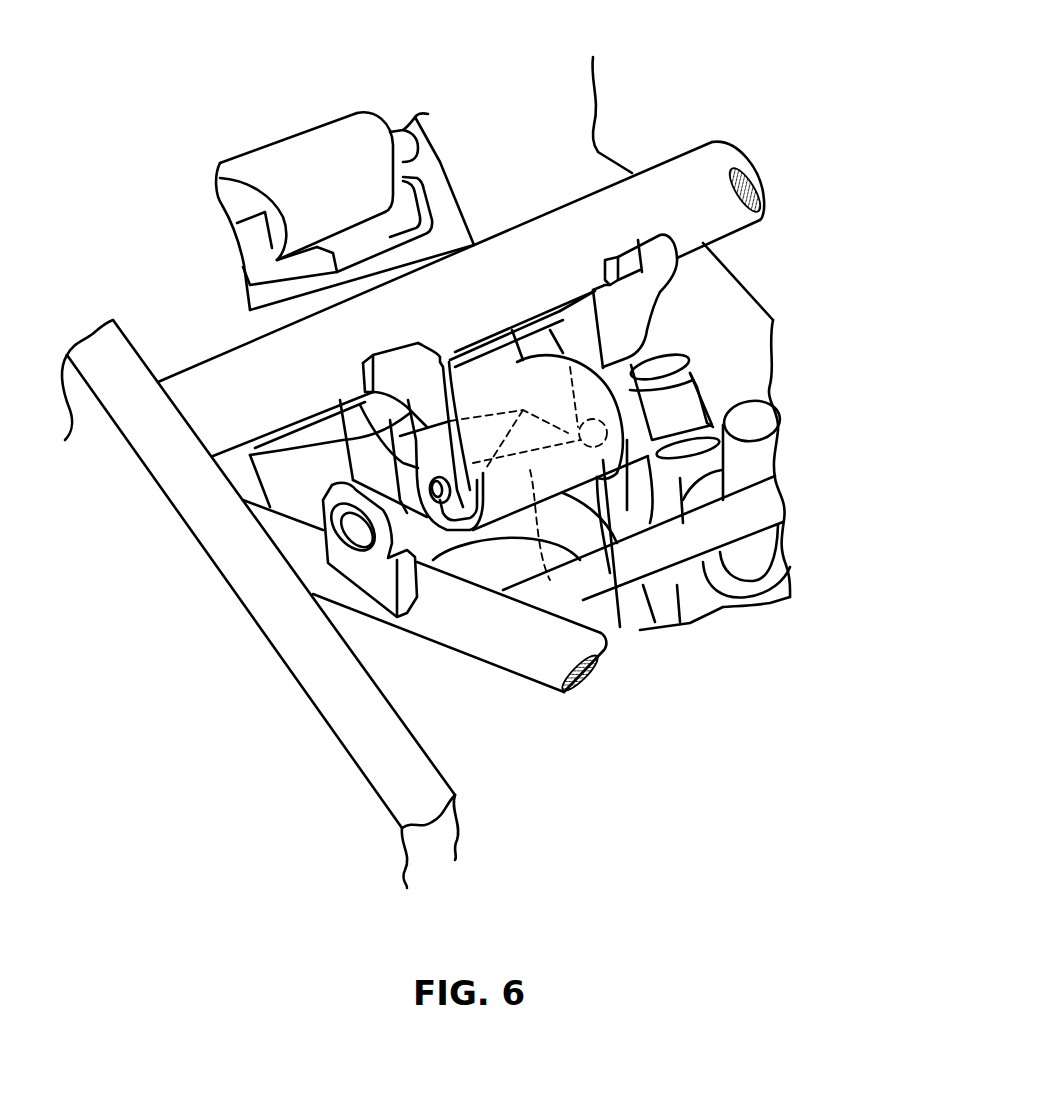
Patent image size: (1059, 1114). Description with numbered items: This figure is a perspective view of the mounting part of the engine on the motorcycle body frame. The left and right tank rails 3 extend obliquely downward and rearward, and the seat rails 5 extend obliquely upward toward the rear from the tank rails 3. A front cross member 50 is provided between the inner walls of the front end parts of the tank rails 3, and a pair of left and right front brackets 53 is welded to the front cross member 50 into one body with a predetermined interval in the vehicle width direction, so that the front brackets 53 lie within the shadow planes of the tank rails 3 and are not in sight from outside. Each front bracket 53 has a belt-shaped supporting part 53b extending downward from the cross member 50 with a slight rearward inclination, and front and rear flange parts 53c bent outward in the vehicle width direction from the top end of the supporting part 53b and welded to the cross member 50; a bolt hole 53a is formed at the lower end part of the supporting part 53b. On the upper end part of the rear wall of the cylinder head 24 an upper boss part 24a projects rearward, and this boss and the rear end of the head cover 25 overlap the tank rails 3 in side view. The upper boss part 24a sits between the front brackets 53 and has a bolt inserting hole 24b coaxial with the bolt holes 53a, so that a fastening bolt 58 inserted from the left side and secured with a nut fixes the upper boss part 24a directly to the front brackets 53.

The tank rail 3 is at (586, 84).
The seat rail 5 is at (520, 682).
The cylinder head 24 is at (297, 503).
The upper boss part 24a is at (613, 573).
The bolt inserting hole 24b is at (533, 552).
The head cover 25 is at (280, 443).
The front cross member 50 is at (530, 213).
The front bracket 53 is at (460, 412).
The bolt hole 53a is at (536, 417).
The supporting part 53b is at (358, 400).
The flange part 53c is at (642, 265).
The fastening bolt 58 is at (430, 520).